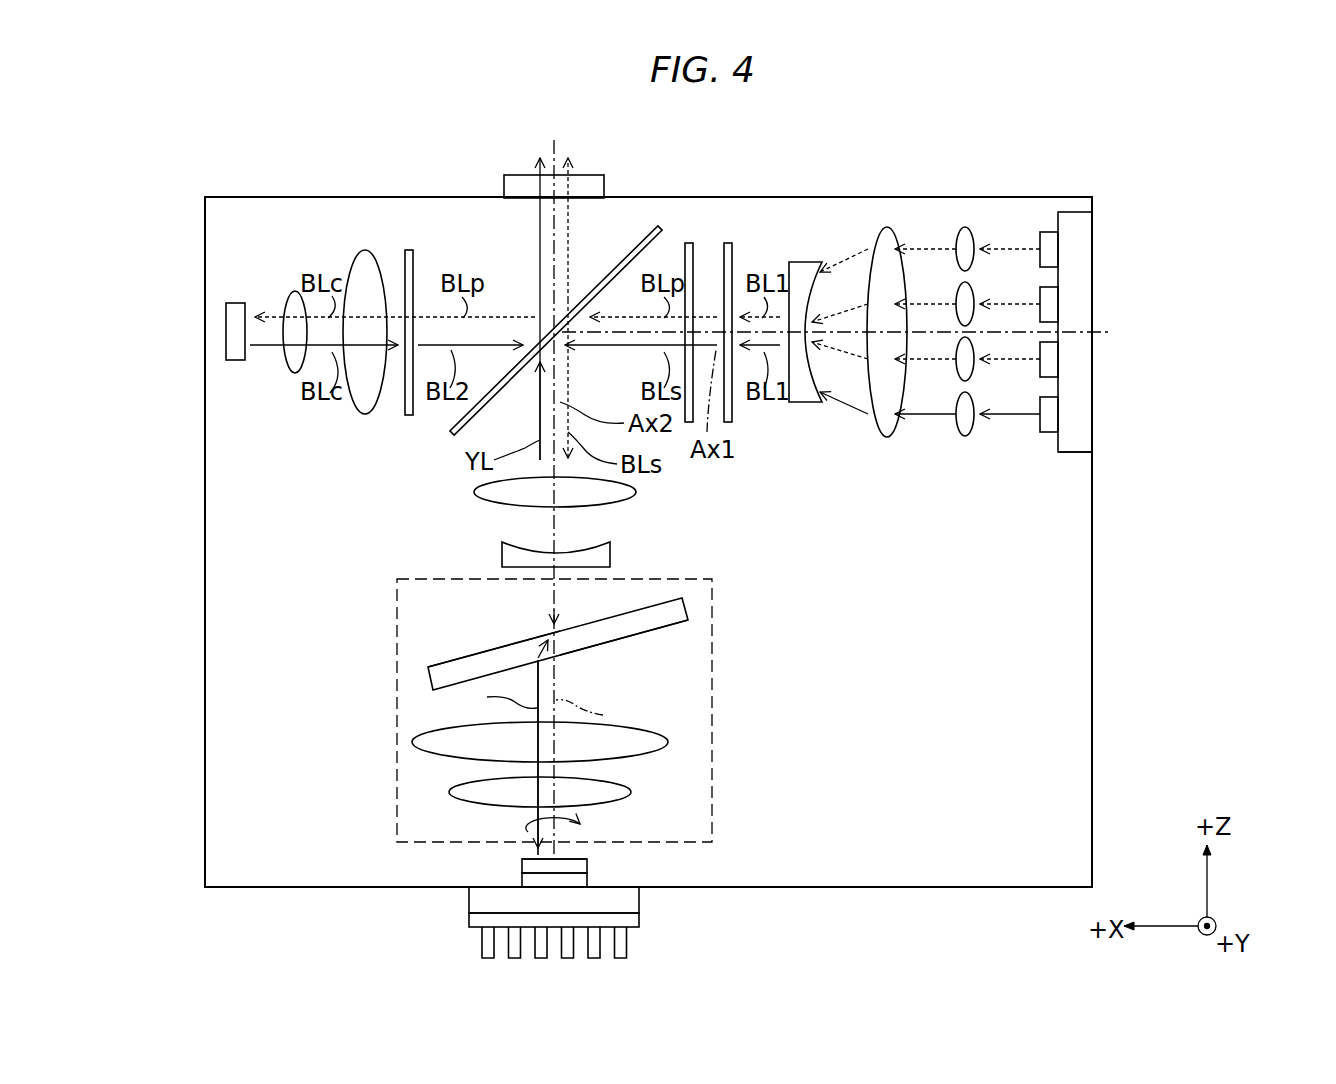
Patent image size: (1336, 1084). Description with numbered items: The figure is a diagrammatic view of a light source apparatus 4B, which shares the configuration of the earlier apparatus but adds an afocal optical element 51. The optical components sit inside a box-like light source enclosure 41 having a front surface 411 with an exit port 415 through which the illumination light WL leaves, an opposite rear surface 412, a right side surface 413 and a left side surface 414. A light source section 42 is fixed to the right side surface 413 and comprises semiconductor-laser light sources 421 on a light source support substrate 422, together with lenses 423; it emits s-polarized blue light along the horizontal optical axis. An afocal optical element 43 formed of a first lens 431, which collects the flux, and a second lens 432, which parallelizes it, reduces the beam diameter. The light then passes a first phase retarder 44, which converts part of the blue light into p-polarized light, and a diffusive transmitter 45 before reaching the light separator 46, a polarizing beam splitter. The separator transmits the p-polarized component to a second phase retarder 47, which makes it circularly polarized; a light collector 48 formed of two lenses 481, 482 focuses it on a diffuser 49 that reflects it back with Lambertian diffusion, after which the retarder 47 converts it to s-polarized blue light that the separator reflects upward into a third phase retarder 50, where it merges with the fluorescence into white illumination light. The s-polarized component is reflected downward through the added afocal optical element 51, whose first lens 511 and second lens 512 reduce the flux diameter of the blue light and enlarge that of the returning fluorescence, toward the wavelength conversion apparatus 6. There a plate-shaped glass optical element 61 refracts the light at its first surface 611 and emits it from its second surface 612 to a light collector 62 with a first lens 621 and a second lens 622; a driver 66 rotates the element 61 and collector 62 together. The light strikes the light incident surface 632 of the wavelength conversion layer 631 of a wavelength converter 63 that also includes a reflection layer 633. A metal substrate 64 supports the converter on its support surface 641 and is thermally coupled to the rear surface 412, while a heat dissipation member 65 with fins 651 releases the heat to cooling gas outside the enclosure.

The light source apparatus 4B is at (1215, 145).
The light source enclosure 41 is at (1094, 233).
The front surface 411 is at (990, 197).
The rear surface 412 is at (930, 889).
The right side surface 413 is at (1092, 678).
The left side surface 414 is at (205, 678).
The exit port 415 is at (478, 178).
The light source section 42 is at (1088, 202).
The light sources 421 is at (1050, 247).
The light source support substrate 422 is at (1075, 452).
The lenses 423 is at (959, 287).
The afocal optical element 43 is at (837, 270).
The first lens 431 is at (870, 232).
The second lens 432 is at (795, 262).
The first phase retarder 44 is at (732, 245).
The diffusive transmitter 45 is at (693, 245).
The light separator 46 is at (660, 228).
The second phase retarder 47 is at (413, 250).
The light collector 48 is at (317, 266).
The lens 481 is at (356, 257).
The lens 482 is at (293, 291).
The diffuser 49 is at (235, 303).
The third phase retarder 50 is at (605, 183).
The afocal optical element 51 is at (626, 522).
The first lens 511 is at (636, 492).
The second lens 512 is at (610, 557).
The wavelength conversion apparatus 6 is at (611, 717).
The optical element 61 is at (597, 644).
The first surface 611 is at (478, 650).
The second surface 612 is at (636, 636).
The light collector 62 is at (619, 763).
The first lens 621 is at (668, 742).
The second lens 622 is at (631, 792).
The wavelength converter 63 is at (674, 850).
The wavelength conversion layer 631 is at (590, 865).
The light incident surface 632 is at (590, 859).
The reflection layer 633 is at (590, 878).
The substrate 64 is at (640, 900).
The support surface 641 is at (485, 887).
The heat dissipation member 65 is at (559, 938).
The fins 651 is at (482, 946).
The driver 66 is at (712, 660).